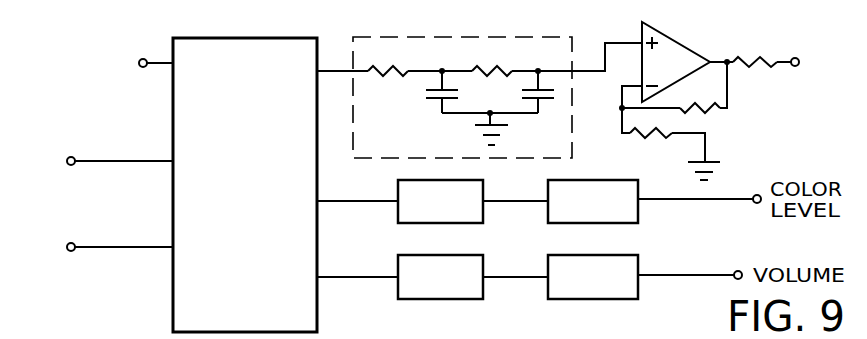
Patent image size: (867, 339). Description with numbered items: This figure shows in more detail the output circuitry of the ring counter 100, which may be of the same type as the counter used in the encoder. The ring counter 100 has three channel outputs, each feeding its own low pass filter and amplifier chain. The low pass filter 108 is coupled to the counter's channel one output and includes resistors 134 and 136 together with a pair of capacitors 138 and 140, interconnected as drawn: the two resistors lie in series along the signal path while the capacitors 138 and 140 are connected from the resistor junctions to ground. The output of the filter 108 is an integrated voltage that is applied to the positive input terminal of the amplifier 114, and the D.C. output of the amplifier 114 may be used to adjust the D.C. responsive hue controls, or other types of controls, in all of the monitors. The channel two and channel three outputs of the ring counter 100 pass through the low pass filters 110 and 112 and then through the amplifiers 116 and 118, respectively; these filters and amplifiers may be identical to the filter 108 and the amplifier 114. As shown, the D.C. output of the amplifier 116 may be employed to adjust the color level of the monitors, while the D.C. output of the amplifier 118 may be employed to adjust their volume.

The ring counter 100 is at (173, 300).
The low pass filter 108 is at (443, 36).
The resistor 134 is at (403, 63).
The resistor 136 is at (481, 63).
The capacitor 138 is at (438, 103).
The capacitor 140 is at (533, 87).
The amplifier 114 is at (686, 47).
The low pass filter 110 is at (397, 191).
The low pass filter 112 is at (425, 254).
The amplifier 116 is at (547, 191).
The amplifier 118 is at (574, 254).